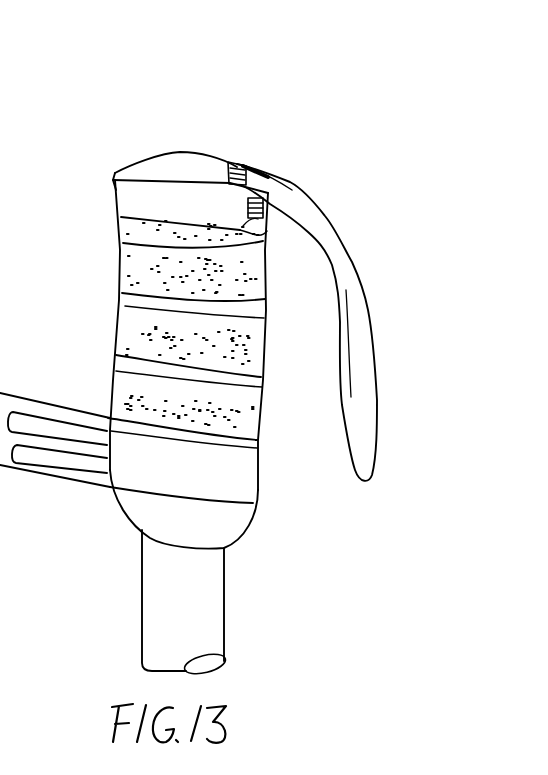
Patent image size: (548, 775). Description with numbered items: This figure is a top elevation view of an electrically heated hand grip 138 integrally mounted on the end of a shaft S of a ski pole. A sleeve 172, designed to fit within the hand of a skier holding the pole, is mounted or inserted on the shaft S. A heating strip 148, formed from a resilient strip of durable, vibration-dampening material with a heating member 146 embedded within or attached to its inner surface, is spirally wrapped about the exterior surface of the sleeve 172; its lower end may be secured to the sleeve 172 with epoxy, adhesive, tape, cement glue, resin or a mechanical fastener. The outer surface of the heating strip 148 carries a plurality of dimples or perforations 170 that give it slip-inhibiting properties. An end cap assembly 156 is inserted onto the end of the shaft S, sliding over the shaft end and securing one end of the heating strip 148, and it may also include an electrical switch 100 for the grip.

The electrically heated hand grip 138 is at (285, 134).
The end cap assembly 156 is at (112, 203).
The dimples or perforations 170 is at (130, 272).
The electrical switch 100 is at (267, 214).
The heating strip 148 is at (45, 383).
The heating member 146 is at (47, 468).
The sleeve 172 is at (246, 524).
The shaft S is at (227, 586).